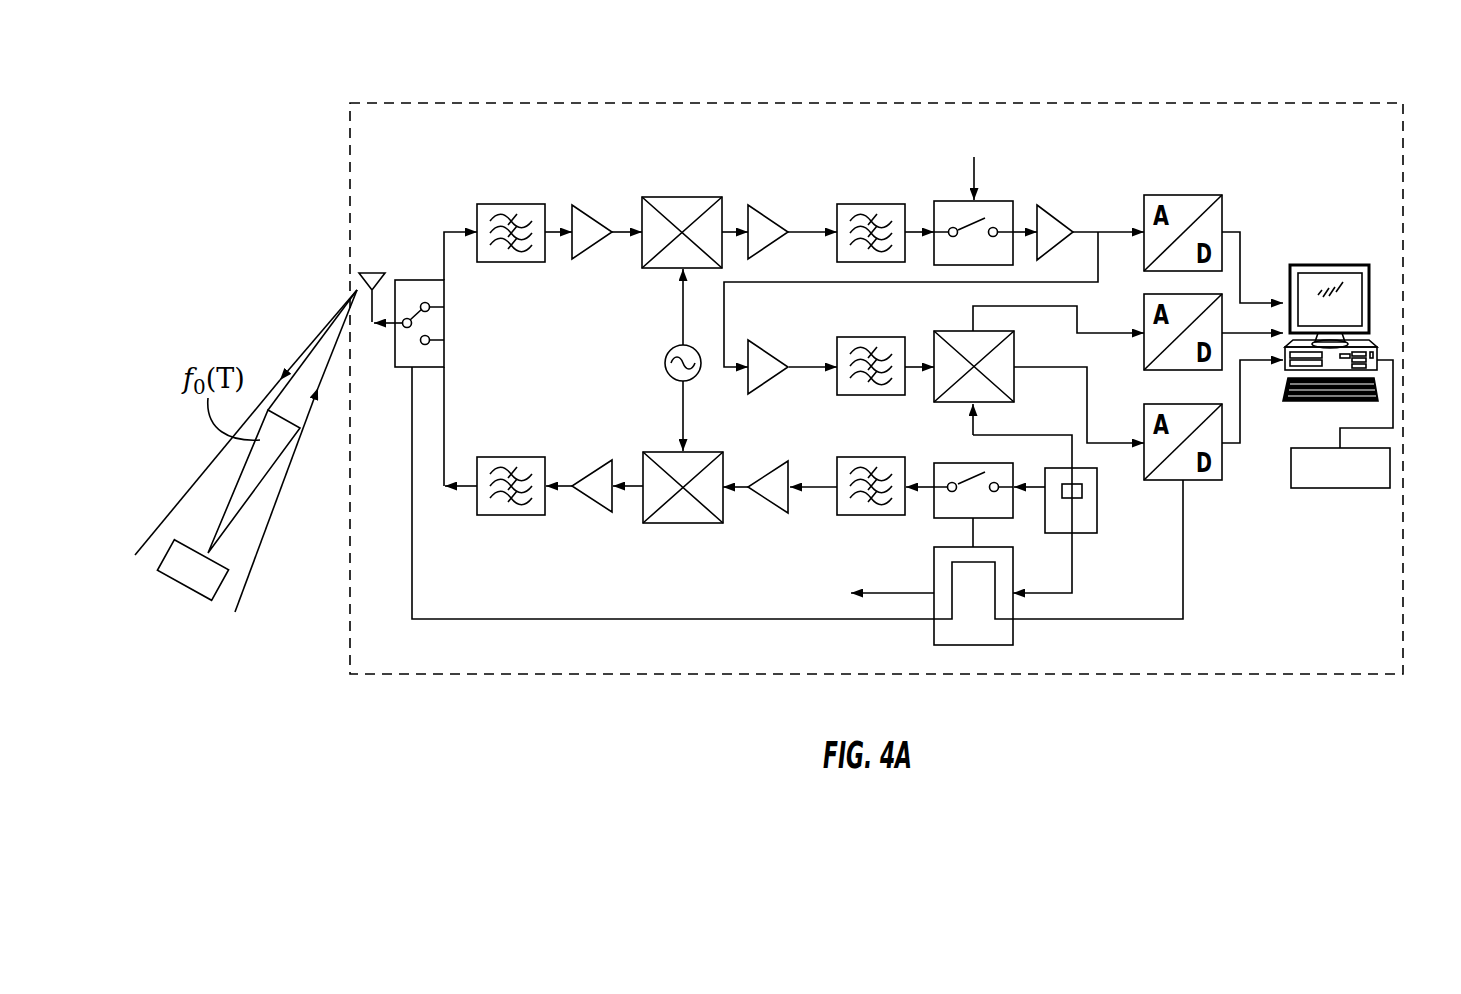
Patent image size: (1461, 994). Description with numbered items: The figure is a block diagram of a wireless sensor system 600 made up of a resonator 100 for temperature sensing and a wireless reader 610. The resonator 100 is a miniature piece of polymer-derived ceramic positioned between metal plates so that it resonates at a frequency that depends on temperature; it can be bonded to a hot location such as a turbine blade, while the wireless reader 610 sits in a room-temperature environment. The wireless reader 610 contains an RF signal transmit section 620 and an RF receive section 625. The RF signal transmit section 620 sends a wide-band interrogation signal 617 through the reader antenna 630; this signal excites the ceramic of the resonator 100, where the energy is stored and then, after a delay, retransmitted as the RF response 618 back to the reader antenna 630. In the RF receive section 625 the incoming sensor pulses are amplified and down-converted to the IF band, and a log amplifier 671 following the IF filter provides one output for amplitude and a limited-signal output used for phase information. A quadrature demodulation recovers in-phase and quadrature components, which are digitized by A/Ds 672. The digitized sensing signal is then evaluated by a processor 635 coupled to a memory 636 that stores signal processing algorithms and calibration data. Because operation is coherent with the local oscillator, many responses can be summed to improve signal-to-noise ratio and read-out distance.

The resonator 100 is at (212, 601).
The sensor system 600 is at (455, 96).
The wireless reader 610 is at (1091, 686).
The interrogation signal 617 is at (300, 352).
The RF response 618 is at (300, 443).
The RF signal transmit section 620 is at (689, 497).
The RF receive section 625 is at (811, 199).
The reader antenna 630 is at (383, 215).
The processor 635 is at (1375, 342).
The memory 636 is at (1335, 490).
The log amplifier 671 is at (1062, 212).
The A/Ds 672 is at (1223, 210).